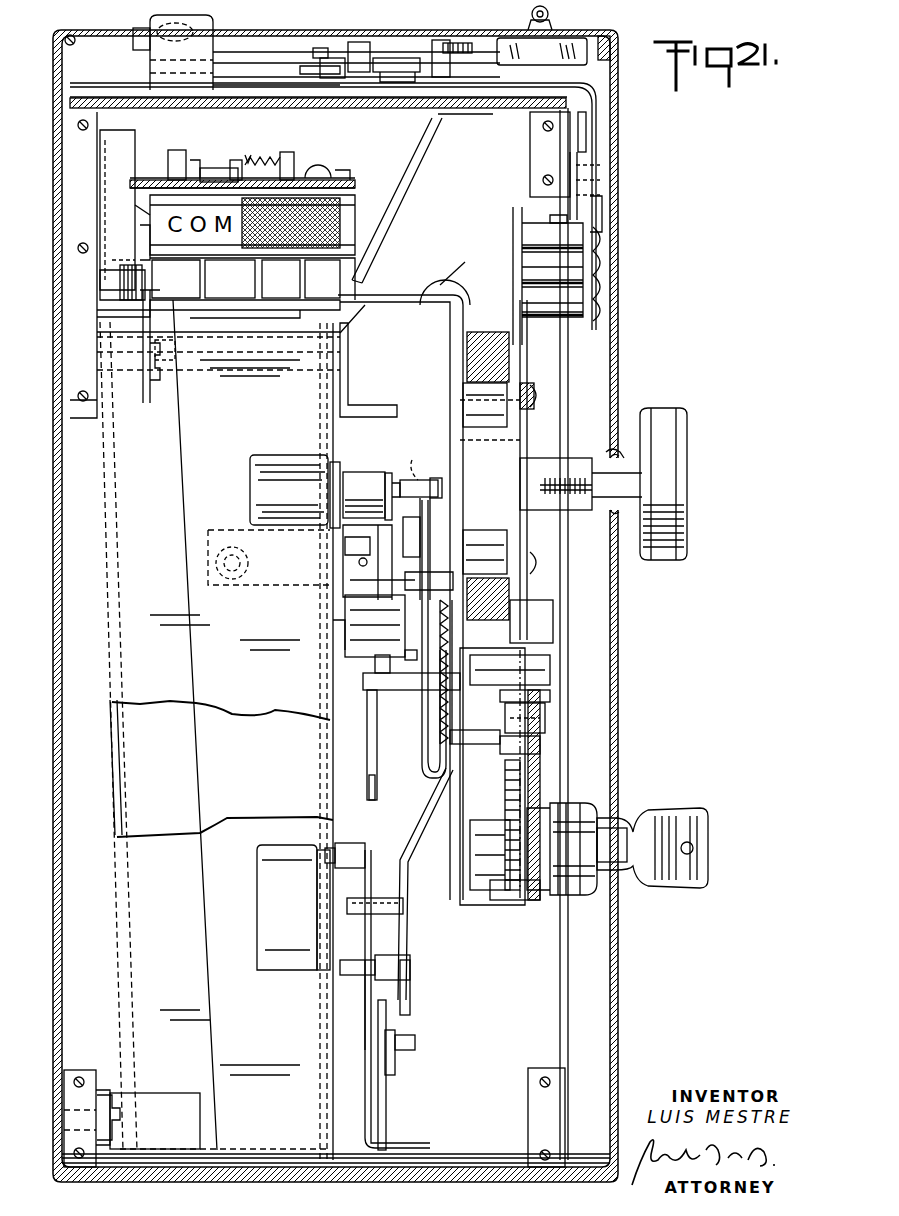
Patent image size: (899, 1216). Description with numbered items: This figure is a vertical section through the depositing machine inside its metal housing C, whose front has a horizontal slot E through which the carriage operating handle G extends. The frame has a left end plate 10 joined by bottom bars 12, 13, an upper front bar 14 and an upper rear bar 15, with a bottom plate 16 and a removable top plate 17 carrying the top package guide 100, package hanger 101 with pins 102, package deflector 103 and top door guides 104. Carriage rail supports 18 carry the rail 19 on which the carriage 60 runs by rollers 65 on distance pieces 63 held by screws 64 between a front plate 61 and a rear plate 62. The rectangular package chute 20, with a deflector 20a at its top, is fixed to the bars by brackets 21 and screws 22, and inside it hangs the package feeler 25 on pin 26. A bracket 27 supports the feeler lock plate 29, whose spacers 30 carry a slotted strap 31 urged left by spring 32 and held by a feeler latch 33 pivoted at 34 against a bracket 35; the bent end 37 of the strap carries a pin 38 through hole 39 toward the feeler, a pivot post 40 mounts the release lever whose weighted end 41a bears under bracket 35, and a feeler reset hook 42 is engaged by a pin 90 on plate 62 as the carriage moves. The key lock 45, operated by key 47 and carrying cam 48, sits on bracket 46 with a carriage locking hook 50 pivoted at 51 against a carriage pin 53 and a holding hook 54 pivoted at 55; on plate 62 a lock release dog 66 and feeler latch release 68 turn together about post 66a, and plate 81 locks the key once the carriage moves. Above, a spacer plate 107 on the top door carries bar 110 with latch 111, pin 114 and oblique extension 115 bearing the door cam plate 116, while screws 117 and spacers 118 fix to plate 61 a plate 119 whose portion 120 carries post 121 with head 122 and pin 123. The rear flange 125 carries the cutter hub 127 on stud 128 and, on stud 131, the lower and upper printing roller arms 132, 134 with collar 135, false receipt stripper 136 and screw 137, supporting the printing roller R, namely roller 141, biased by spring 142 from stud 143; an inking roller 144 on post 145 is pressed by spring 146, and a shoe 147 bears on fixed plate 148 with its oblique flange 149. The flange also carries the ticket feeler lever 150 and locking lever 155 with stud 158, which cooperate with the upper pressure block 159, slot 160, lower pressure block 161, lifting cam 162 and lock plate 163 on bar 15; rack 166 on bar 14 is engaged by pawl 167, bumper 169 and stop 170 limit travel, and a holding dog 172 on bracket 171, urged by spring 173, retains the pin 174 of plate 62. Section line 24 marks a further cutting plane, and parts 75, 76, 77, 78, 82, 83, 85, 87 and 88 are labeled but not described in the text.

The housing C is at (58, 945).
The horizontal slot E is at (614, 455).
The carriage operating handle G is at (683, 508).
The printing roller R is at (118, 225).
The left end plate 10 is at (440, 450).
The distance bar 12 is at (76, 1068).
The distance bar 13 is at (532, 1070).
The upper front distance piece 14 is at (530, 150).
The upper rear bar 15 is at (80, 180).
The bottom plate 16 is at (468, 1167).
The top plate 17 is at (386, 125).
The carriage rail supports 18 is at (548, 613).
The upper carriage rail 19 is at (478, 345).
The package chute 20 is at (215, 666).
The package deflector 20a is at (362, 320).
The brackets 21 is at (165, 1100).
The screws 22 is at (110, 1105).
The section line 24 is at (360, 795).
The package feeler 25 is at (215, 781).
The pin 26 is at (355, 340).
The bracket 27 is at (270, 470).
The package feeler lock plate 29 is at (340, 462).
The spacers 30 is at (350, 540).
The slotted strap 31 is at (350, 580).
The spring 32 is at (355, 556).
The feeler latch 33 is at (390, 474).
The pivot 34 is at (356, 475).
The bracket 35 is at (395, 535).
The bent end of strap 37 is at (263, 575).
The pin 38 is at (224, 570).
The hole 39 is at (222, 545).
The pivot post 40 is at (330, 656).
The loaded end of release lever 41a is at (375, 650).
The feeler reset hook 42 is at (368, 740).
The key operated lock 45 is at (562, 812).
The bracket 46 is at (535, 748).
The key 47 is at (672, 880).
The cam 48 is at (494, 765).
The carriage locking hook 50 is at (525, 700).
The pivot 51 is at (540, 720).
The carriage pin 53 is at (520, 685).
The carriage lock holding hook 54 is at (530, 775).
The pivot 55 is at (500, 885).
The carriage 60 is at (448, 318).
The front plate 61 is at (518, 365).
The rear plate 62 is at (450, 362).
The distance pieces 63 is at (478, 430).
The screws 64 is at (540, 410).
The rollers 65 is at (470, 403).
The carriage lock release dog 66 is at (462, 835).
The pivot post 66a is at (520, 665).
The feeler latch release 68 is at (422, 730).
The pin 75 is at (440, 485).
The gear 76 is at (370, 600).
The shaft 77 is at (428, 535).
The bushing 78 is at (450, 580).
The plate 81 is at (488, 858).
The pawl 82 is at (410, 1005).
The ratchet 83 is at (405, 980).
The lever 85 is at (365, 1118).
The spring 87 is at (395, 1125).
The pin 88 is at (408, 1040).
The pin 90 is at (438, 706).
The top package guide 100 is at (157, 46).
The package hanger 101 is at (140, 30).
The pins 102 is at (181, 52).
The package deflector 103 is at (396, 203).
The top door guides 104 is at (88, 95).
The spacer plate 107 is at (372, 88).
The bar 110 is at (310, 72).
The latch 111 is at (324, 57).
The pin 114 is at (364, 40).
The oblique extension 115 is at (250, 70).
The door opening cam plate 116 is at (356, 49).
The screws 117 is at (605, 282).
The spacers 118 is at (527, 278).
The plate 119 is at (603, 212).
The portion of plate 120 is at (470, 80).
The post 121 is at (441, 40).
The head 122 is at (468, 42).
The pin 123 is at (396, 56).
The flange 125 is at (385, 295).
The hub 127 is at (240, 270).
The stud 128 is at (215, 168).
The printing roller arm supporting stud 131 is at (320, 278).
The lower printing roller arm 132 is at (372, 260).
The upper printing roller arm 134 is at (140, 172).
The bearing and spacer collar 135 is at (350, 185).
The false receipt stripper 136 is at (295, 165).
The screw 137 is at (345, 175).
The printing roller 141 is at (150, 226).
The spring 142 is at (238, 160).
The stud 143 is at (250, 160).
The inking roller 144 is at (325, 225).
The post 145 is at (325, 170).
The spring 146 is at (270, 162).
The shoe 147 is at (108, 262).
The fixed plate 148 is at (147, 405).
The oblique flange 149 is at (120, 295).
The ticket feeler lever 150 is at (190, 300).
The carriage locking lever 155 is at (262, 305).
The stud 158 is at (252, 279).
The upper cutter pressure block 159 is at (140, 215).
The slot 160 is at (123, 209).
The lower cutter pressure block 161 is at (127, 249).
The printing roller lifting cam 162 is at (196, 165).
The cutting carriage lock plate 163 is at (168, 300).
The rack 166 is at (600, 125).
The pawl 167 is at (600, 160).
The bumper 169 is at (445, 272).
The stop 170 is at (522, 385).
The bracket 171 is at (295, 950).
The holding dog 172 is at (365, 845).
The spring 173 is at (365, 950).
The pin 174 is at (375, 898).